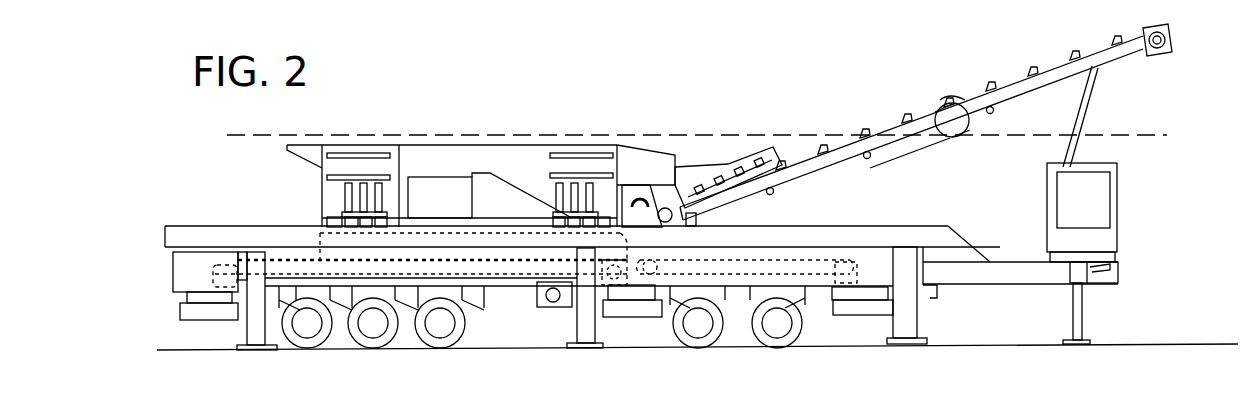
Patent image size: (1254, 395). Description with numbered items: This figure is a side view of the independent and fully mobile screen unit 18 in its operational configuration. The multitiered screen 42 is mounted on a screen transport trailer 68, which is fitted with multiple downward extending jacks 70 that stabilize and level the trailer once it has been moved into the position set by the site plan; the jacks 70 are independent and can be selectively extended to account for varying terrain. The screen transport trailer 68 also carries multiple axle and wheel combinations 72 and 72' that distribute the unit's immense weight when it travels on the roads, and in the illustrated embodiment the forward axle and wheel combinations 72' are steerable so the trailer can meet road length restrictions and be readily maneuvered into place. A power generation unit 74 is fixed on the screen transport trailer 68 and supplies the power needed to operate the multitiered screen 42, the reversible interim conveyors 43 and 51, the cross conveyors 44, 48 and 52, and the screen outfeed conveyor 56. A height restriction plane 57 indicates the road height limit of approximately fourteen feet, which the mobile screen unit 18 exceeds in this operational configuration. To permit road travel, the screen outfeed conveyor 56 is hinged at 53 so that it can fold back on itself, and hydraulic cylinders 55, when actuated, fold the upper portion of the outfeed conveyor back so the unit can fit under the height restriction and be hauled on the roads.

The mobile screen unit 18 is at (264, 182).
The multitiered screen 42 is at (500, 155).
The reversible interim conveyor 43 is at (300, 258).
The cross conveyor 44 is at (200, 313).
The cross conveyor 48 is at (632, 308).
The reversible interim conveyor 51 is at (794, 252).
The cross conveyor 52 is at (867, 307).
The hinge 53 is at (975, 126).
The hydraulic cylinders 55 is at (907, 155).
The screen outfeed conveyor 56 is at (957, 103).
The height restriction plane 57 is at (278, 138).
The screen transport trailer 68 is at (200, 240).
The jacks 70 is at (258, 350).
The axle and wheel combinations 72 is at (387, 340).
The forward axle and wheel combinations 72' is at (684, 338).
The power generation unit 74 is at (1096, 210).